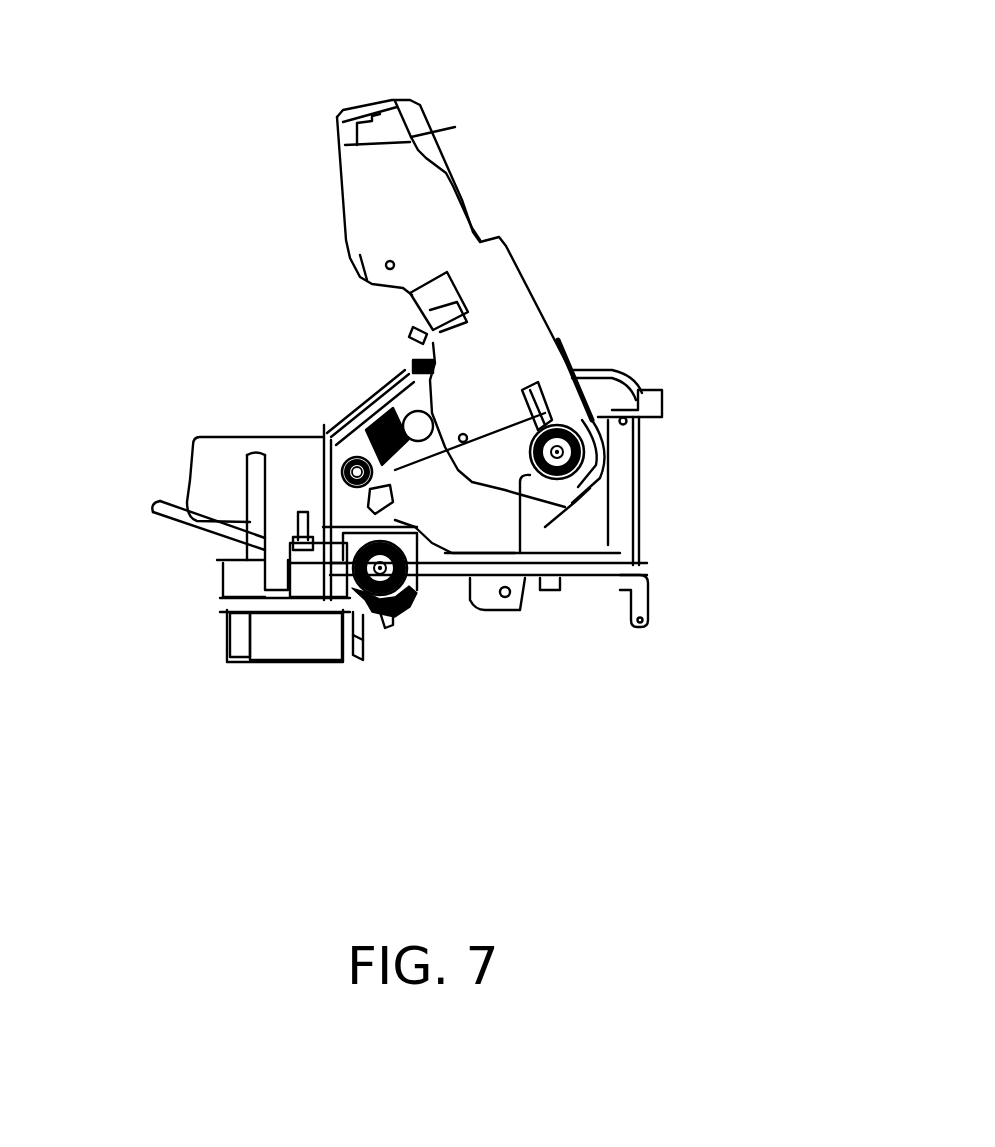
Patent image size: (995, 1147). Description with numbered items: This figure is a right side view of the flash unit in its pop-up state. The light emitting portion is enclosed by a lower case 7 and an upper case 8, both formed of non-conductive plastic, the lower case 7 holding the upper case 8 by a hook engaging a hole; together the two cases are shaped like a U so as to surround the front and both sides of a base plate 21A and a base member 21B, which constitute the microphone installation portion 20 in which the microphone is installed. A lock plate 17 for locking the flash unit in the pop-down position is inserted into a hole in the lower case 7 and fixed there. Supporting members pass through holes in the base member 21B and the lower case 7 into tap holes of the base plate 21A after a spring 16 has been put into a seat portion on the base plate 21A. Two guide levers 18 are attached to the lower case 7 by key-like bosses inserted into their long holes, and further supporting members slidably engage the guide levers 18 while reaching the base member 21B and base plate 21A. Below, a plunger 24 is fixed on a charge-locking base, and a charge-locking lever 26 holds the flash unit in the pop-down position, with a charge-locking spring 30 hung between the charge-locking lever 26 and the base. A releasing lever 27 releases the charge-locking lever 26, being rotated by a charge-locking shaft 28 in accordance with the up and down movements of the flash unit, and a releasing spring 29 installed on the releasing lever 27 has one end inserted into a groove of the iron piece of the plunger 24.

The upper case 8 is at (465, 185).
The lower case 7 is at (540, 355).
The lock plate 17 is at (466, 312).
The spring 16 is at (576, 372).
The base member 21B is at (628, 506).
The base plate 21A is at (647, 598).
The charge-locking lever 26 is at (418, 567).
The charge-locking spring 30 is at (388, 612).
The releasing spring 29 is at (358, 655).
The guide levers 18 is at (384, 415).
The microphone installation portion 20 is at (390, 360).
The releasing lever 27 is at (321, 530).
The charge-locking shaft 28 is at (294, 508).
The plunger 24 is at (238, 645).